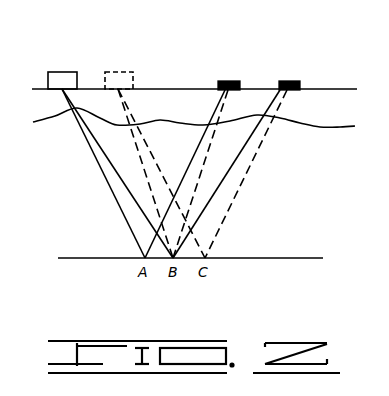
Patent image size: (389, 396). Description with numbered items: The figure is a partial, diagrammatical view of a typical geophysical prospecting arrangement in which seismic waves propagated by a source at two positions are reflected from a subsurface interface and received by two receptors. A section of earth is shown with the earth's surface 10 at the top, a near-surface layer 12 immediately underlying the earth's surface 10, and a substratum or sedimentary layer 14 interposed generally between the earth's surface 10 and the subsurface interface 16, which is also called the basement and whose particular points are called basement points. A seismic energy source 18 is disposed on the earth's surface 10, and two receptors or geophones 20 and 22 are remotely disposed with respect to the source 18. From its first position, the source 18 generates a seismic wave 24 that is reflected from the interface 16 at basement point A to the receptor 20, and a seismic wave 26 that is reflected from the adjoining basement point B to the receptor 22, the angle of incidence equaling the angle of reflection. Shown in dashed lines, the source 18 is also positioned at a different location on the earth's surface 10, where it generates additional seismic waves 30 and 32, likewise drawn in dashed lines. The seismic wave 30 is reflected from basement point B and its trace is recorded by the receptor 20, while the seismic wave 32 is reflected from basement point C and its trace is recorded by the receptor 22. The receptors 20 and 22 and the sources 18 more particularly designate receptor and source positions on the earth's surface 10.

The earth's surface 10 is at (331, 82).
The near-surface layer 12 is at (314, 110).
The substratum or sedimentary layer 14 is at (288, 229).
The subsurface interface 16 is at (89, 260).
The seismic energy source 18 is at (63, 62).
The receptor or geophone 20 is at (237, 66).
The receptor or geophone 22 is at (291, 67).
The seismic wave 24 is at (105, 196).
The seismic wave 26 is at (134, 215).
The seismic wave 30 is at (216, 156).
The seismic wave 32 is at (245, 194).